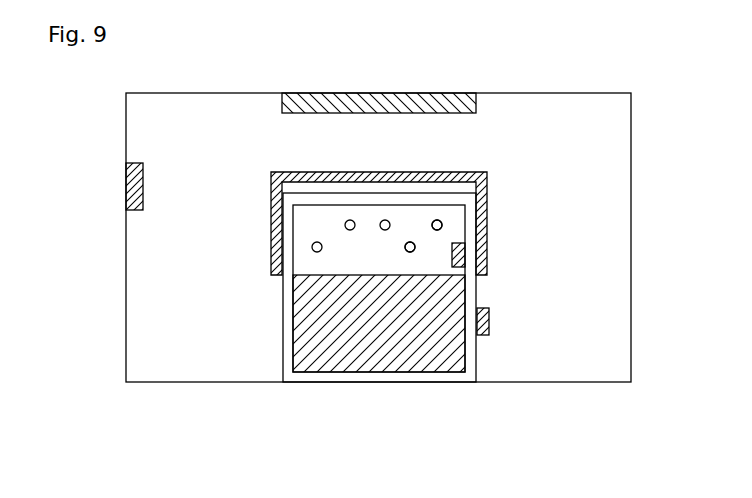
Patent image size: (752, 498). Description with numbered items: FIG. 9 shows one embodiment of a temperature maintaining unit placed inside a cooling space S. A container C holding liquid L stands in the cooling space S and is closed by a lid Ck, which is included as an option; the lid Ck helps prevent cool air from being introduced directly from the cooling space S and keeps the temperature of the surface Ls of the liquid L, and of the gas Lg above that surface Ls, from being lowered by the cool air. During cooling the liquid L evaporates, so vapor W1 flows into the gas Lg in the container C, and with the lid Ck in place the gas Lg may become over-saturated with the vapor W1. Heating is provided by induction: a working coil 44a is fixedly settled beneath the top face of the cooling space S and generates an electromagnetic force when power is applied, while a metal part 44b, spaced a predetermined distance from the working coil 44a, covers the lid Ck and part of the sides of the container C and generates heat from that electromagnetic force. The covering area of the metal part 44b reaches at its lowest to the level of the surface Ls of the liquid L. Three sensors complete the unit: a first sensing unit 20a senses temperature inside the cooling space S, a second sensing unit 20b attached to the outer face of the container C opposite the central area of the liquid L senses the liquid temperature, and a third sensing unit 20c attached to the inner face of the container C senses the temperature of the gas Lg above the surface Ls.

The cooling space S is at (378, 237).
The working coil 44a is at (476, 105).
The metal part 44b is at (487, 176).
The first sensing unit 20a is at (126, 180).
The second sensing unit 20b is at (489, 320).
The third sensing unit 20c is at (465, 252).
The lid Ck is at (463, 182).
The container C is at (473, 345).
The liquid L is at (341, 346).
The surface of the liquid Ls is at (318, 275).
The gas Lg is at (377, 239).
The vapor W1 is at (410, 242).